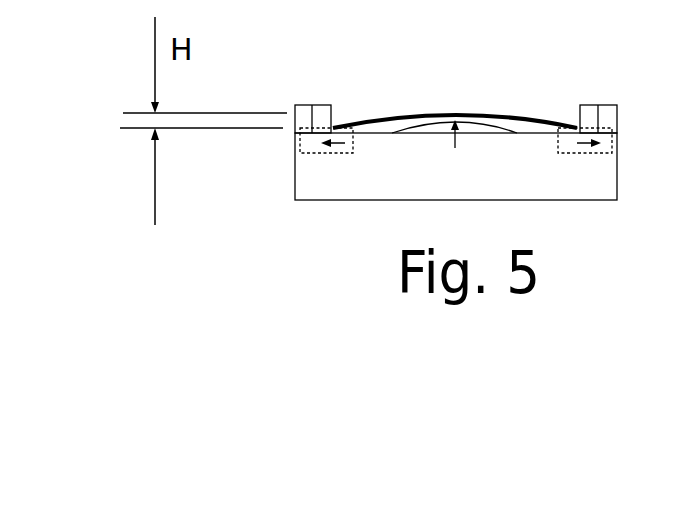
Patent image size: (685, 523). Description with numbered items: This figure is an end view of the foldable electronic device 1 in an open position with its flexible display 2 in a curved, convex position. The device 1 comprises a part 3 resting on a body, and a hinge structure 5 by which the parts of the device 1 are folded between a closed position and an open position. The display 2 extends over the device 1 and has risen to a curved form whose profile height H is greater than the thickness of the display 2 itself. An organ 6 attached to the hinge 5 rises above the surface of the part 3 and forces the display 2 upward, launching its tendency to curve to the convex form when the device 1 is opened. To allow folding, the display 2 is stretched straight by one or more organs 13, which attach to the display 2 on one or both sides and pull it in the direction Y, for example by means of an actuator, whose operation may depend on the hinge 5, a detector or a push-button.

The device 1 is at (342, 82).
The display 2 is at (515, 117).
The part 3 is at (340, 187).
The hinge structure 5 is at (607, 117).
The organ 6 is at (440, 128).
The organ 13 is at (310, 147).